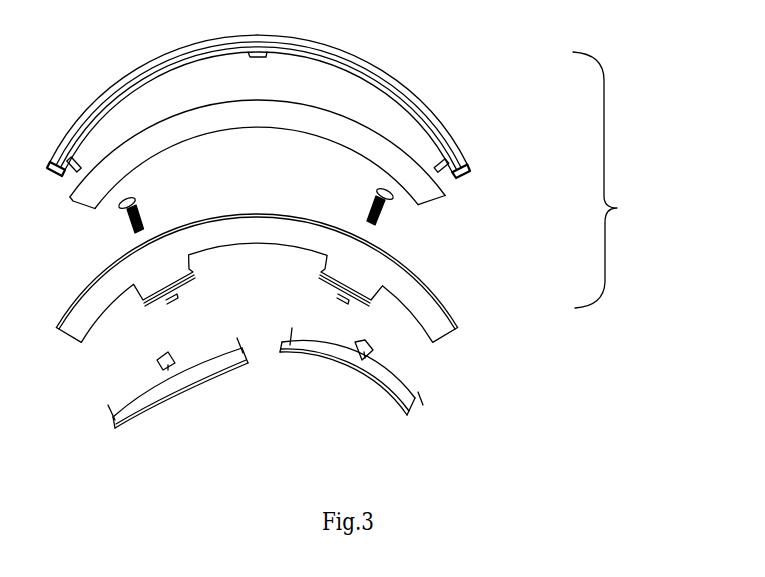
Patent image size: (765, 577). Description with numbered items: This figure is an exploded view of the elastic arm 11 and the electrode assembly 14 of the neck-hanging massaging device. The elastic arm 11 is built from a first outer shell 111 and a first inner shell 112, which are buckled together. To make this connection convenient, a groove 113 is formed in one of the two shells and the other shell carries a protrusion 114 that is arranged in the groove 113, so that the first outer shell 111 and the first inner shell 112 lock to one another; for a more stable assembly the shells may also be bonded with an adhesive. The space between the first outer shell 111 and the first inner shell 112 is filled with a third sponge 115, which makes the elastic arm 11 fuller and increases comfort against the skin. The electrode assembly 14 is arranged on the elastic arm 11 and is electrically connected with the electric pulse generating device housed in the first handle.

The elastic arm 11 is at (613, 180).
The first outer shell 111 is at (441, 110).
The first inner shell 112 is at (441, 323).
The groove 113 is at (420, 279).
The protrusion 114 is at (447, 131).
The third sponge 115 is at (446, 191).
The electrode assembly 14 is at (153, 405).